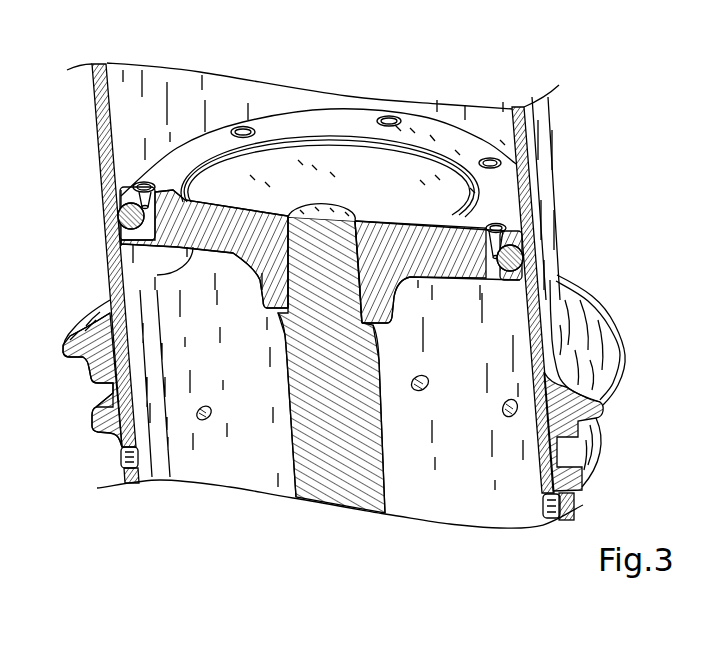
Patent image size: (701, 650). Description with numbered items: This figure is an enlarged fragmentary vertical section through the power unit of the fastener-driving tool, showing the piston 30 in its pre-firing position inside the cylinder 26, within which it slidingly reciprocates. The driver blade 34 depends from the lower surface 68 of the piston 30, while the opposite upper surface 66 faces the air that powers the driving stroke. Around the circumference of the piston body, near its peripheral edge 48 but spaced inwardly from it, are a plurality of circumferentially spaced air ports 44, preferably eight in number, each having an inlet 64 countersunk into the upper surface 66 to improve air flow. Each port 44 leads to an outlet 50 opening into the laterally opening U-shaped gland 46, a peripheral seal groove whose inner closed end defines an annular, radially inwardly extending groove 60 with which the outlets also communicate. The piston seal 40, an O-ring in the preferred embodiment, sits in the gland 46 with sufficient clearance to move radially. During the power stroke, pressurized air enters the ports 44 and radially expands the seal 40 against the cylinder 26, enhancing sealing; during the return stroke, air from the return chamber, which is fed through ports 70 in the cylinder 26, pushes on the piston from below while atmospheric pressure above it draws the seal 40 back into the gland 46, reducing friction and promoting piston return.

The cylinder 26 is at (545, 124).
The piston 30 is at (333, 110).
The driver blade 34 is at (363, 490).
The piston seal 40 is at (528, 268).
The air ports 44 is at (243, 128).
The gland 46 is at (500, 283).
The peripheral edge 48 is at (522, 237).
The outlets 50 is at (120, 245).
The groove 60 is at (503, 223).
The inlet 64 is at (390, 119).
The upper surface 66 is at (367, 187).
The lower surface 68 is at (157, 275).
The ports 70 is at (209, 420).